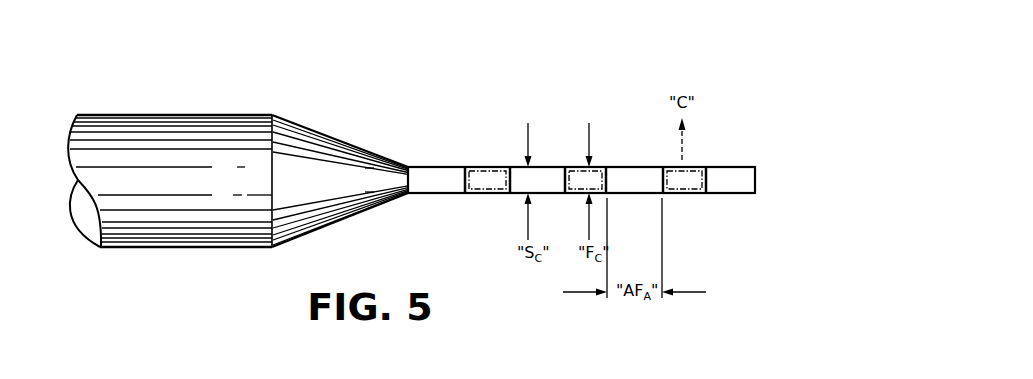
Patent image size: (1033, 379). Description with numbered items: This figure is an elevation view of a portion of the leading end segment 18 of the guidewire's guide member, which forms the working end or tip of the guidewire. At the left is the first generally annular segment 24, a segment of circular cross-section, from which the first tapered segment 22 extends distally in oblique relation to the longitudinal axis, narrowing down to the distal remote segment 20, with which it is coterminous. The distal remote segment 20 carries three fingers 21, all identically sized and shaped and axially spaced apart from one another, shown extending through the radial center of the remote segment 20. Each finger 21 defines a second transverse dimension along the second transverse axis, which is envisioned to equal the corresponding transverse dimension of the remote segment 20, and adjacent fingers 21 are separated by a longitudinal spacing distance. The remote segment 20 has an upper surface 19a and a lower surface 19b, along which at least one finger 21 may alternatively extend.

The leading end segment 18 is at (329, 60).
The first generally annular segment 24 is at (195, 126).
The first tapered segment 22 is at (327, 139).
The distal remote segment 20 is at (566, 93).
The fingers 21 is at (474, 172).
The upper surface 19a is at (725, 167).
The lower surface 19b is at (722, 195).